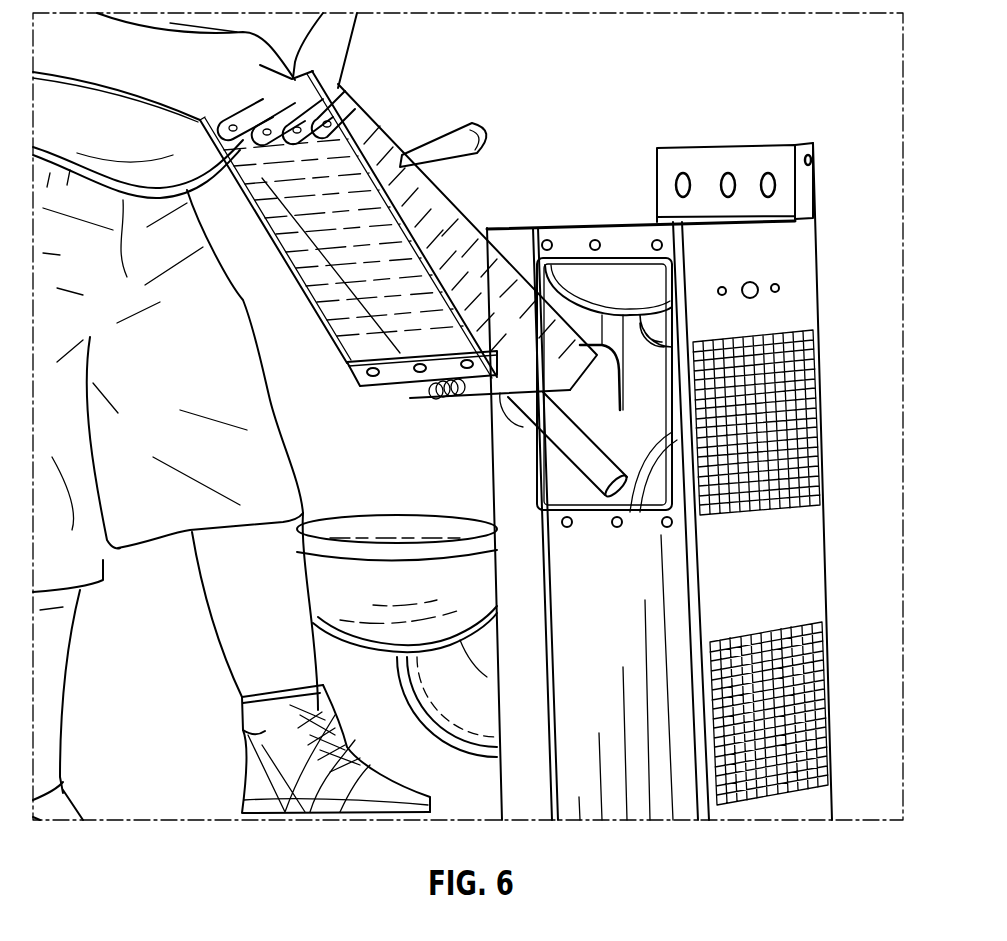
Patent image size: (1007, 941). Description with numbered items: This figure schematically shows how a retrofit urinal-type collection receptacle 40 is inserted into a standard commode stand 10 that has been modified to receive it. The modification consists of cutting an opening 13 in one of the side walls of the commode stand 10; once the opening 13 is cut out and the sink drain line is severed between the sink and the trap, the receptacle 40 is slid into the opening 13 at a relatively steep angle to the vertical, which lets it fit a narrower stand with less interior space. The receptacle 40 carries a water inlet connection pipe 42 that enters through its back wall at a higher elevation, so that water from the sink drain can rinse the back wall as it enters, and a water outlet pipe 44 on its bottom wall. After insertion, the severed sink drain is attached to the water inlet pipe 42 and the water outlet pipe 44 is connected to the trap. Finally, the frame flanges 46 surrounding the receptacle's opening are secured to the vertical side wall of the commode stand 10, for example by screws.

The commode stand 10 is at (667, 825).
The opening 13 is at (636, 355).
The retrofit urinal-type collection receptacle 40 is at (473, 216).
The water inlet connection pipe 42 is at (450, 147).
The water outlet pipe 44 is at (565, 437).
The frame flanges 46 is at (390, 372).